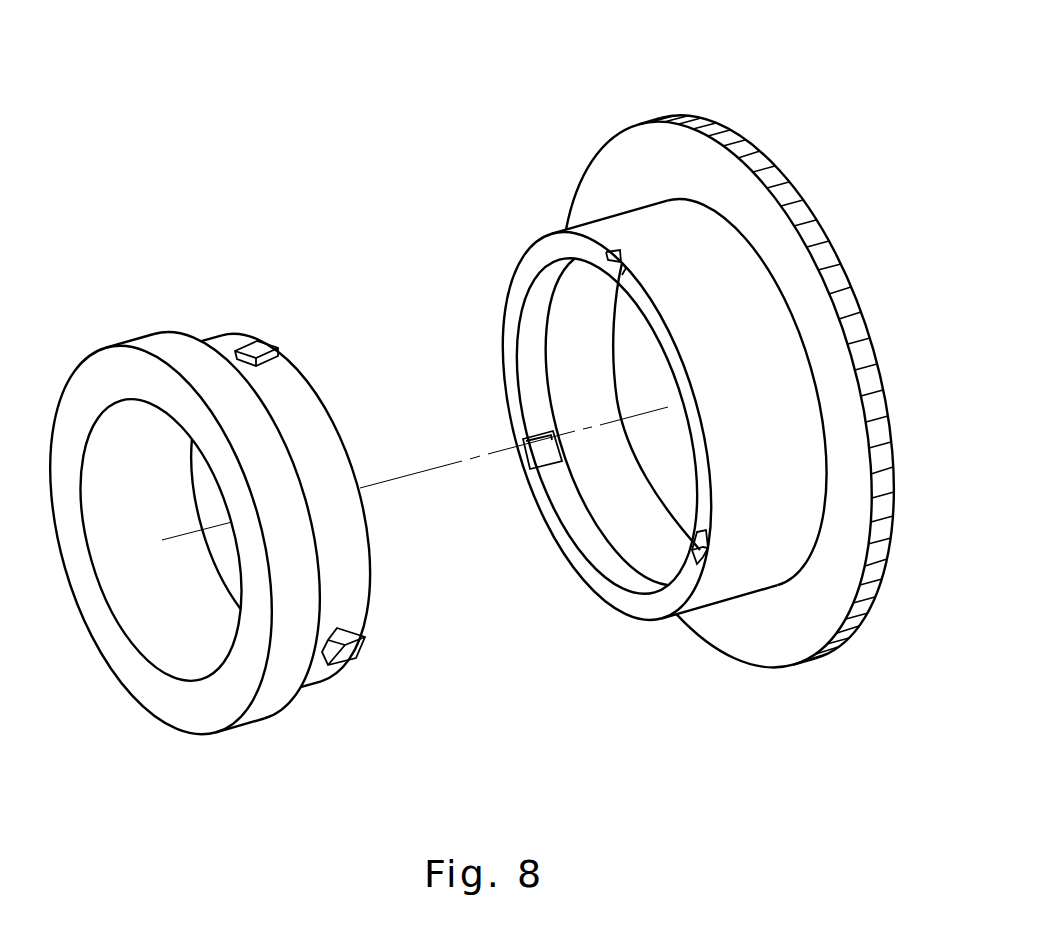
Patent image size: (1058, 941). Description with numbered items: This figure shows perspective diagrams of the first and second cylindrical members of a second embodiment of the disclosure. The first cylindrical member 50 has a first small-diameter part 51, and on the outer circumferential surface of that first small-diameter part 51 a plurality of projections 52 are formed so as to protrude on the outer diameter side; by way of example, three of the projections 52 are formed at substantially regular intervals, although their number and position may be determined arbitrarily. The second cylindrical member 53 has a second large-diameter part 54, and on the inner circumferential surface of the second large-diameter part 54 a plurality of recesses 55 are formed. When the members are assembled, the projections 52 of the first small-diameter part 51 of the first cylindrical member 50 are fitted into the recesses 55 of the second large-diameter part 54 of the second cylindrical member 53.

The first cylindrical member 50 is at (148, 303).
The first small-diameter part 51 is at (318, 418).
The projection 52 is at (265, 344).
The second cylindrical member 53 is at (625, 89).
The second large-diameter part 54 is at (598, 554).
The recess 55 is at (615, 263).